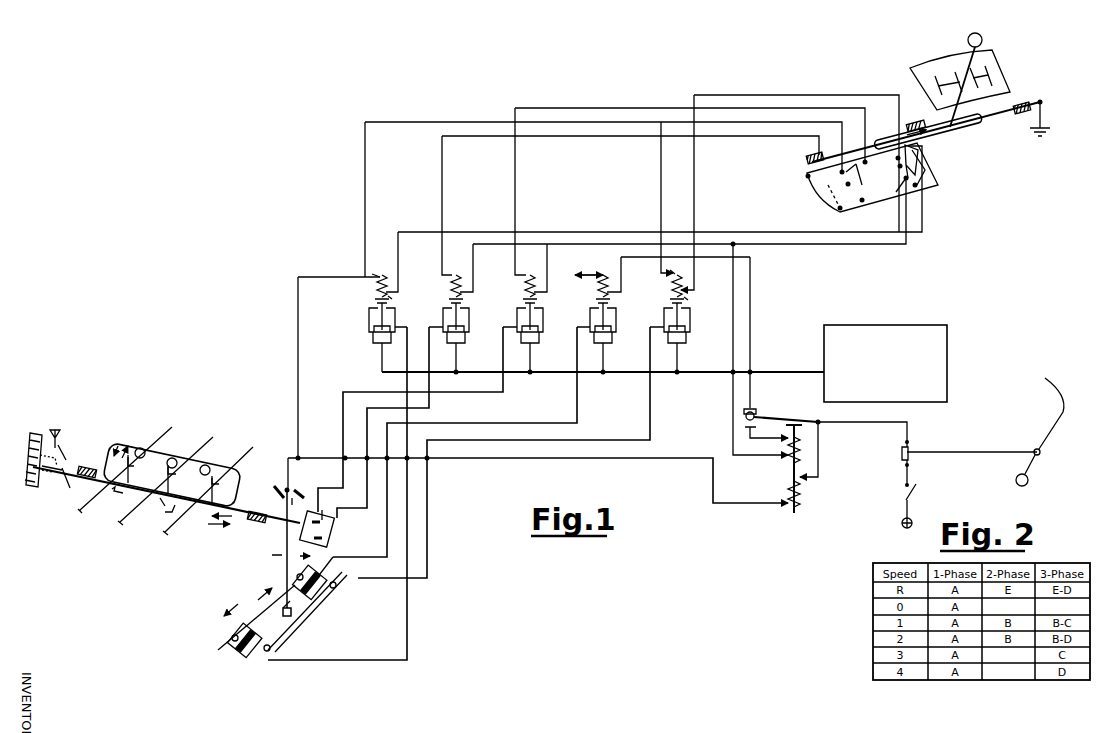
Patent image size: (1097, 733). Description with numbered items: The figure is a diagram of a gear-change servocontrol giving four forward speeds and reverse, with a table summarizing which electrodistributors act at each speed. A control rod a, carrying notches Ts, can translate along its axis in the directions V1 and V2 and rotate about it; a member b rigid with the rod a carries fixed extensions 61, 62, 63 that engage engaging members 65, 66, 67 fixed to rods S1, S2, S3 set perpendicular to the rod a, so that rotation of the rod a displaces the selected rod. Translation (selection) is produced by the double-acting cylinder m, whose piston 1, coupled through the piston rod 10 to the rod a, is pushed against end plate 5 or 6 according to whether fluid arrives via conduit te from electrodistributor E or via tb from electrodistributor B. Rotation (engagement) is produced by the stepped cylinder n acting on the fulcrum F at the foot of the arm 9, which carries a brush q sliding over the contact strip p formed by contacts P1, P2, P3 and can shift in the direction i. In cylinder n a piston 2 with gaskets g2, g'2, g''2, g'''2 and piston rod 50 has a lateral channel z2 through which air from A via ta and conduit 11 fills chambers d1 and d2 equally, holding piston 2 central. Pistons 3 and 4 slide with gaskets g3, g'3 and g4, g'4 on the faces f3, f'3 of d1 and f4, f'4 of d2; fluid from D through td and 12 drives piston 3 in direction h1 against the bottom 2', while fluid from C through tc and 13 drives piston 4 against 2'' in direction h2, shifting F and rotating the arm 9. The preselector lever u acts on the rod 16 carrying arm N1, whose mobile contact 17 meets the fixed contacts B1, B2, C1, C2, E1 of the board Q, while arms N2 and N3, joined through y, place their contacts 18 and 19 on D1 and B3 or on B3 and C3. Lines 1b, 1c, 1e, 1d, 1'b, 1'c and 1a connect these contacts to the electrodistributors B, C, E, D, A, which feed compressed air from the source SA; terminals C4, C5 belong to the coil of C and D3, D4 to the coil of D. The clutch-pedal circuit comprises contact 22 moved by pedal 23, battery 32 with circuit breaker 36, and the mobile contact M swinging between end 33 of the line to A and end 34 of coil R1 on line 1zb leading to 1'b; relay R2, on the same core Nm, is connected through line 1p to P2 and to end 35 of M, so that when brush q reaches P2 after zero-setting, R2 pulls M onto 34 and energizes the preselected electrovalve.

The piston 1 is at (324, 529).
The piston 2 is at (307, 612).
The piston 3 is at (322, 560).
The piston 4 is at (254, 662).
The end plate 5 is at (332, 536).
The end plate 6 is at (300, 534).
The arm 9 is at (268, 550).
The piston rod 10 is at (314, 551).
The conduit 11 is at (330, 572).
The conduit 12 is at (345, 578).
The conduit 13 is at (272, 662).
The rod 16 is at (970, 128).
The mobile contact 17 is at (855, 189).
The mobile contact 18 is at (900, 166).
The mobile contact 19 is at (923, 178).
The contact 22 is at (957, 457).
The pedal 23 is at (1030, 378).
The supply battery 32 is at (916, 523).
The end 33 is at (758, 410).
The end 34 is at (766, 429).
The end 35 is at (853, 440).
The circuit breaker 36 is at (916, 491).
The fixed extension 61 is at (144, 457).
The fixed extension 62 is at (176, 458).
The fixed extension 63 is at (209, 467).
The engaging member 65 is at (128, 478).
The engaging member 66 is at (170, 480).
The engaging member 67 is at (222, 491).
The control rod a is at (166, 505).
The member b is at (238, 482).
The contacts p is at (286, 552).
The brush q is at (296, 506).
The double-acting cylinder m is at (324, 509).
The stepped cylinder n is at (310, 605).
The direction of shift i is at (287, 553).
The lever u is at (995, 60).
The connection y is at (918, 163).
The board Q is at (884, 204).
The mobile contact M is at (786, 457).
The fulcrum F is at (285, 632).
The piston rod 50 is at (284, 617).
The electrodistributor A is at (594, 323).
The electrodistributor B is at (447, 323).
The electrodistributor C is at (379, 323).
The electrodistributor D is at (668, 323).
The electrodistributor E is at (521, 323).
The source of compressed air SA is at (885, 363).
The rod S1 is at (82, 520).
The rod S2 is at (130, 527).
The rod S3 is at (167, 537).
The contact P1 is at (276, 484).
The contact P2 is at (284, 498).
The contact P3 is at (298, 488).
The relay coil R1 is at (802, 450).
The second relay R2 is at (802, 494).
The magnetic core Nm is at (790, 474).
The notches Ts is at (161, 507).
The arrow of translation V1 is at (230, 518).
The arrow of translation V2 is at (218, 531).
The fixed contact B1 is at (806, 177).
The fixed contact B2 is at (838, 207).
The contact B3 is at (899, 186).
The fixed contact C1 is at (836, 174).
The fixed contact C2 is at (870, 199).
The contact C3 is at (918, 186).
The terminal C4 is at (395, 296).
The terminal C5 is at (373, 270).
The terminal D1 is at (892, 156).
The terminal D3 is at (692, 297).
The terminal D4 is at (671, 266).
The fixed contact E1 is at (872, 167).
The arm N1 is at (865, 176).
The arm N2 is at (912, 150).
The arm N3 is at (920, 158).
The line 1a is at (759, 332).
The line 1b is at (630, 198).
The line 1c is at (560, 283).
The line 1d is at (791, 185).
The line 1e is at (690, 184).
The line 1'b is at (684, 235).
The line 1'c is at (655, 219).
The line 1p is at (538, 473).
The line 1zb is at (751, 349).
The conduit ta is at (455, 442).
The conduit tb is at (383, 422).
The conduit tc is at (337, 493).
The conduit td is at (504, 453).
The conduit te is at (410, 419).
The bottom 2' is at (291, 599).
The bottom 2'' is at (256, 617).
The chamber d1 is at (330, 590).
The chamber d2 is at (230, 637).
The internal face f3 is at (292, 583).
The internal face f4 is at (236, 634).
The internal face f'3 is at (337, 613).
The internal face f'4 is at (308, 663).
The gasket g2 is at (298, 574).
The gasket g'2 is at (350, 592).
The gasket g''2 is at (209, 654).
The gasket g'''2 is at (308, 668).
The sealing gasket g3 is at (324, 556).
The sealing gasket g'3 is at (352, 602).
The gasket g4 is at (237, 650).
The gasket g'4 is at (269, 663).
The direction of displacement h1 is at (233, 612).
The direction of displacement h2 is at (267, 591).
The lateral conduit z2 is at (312, 612).